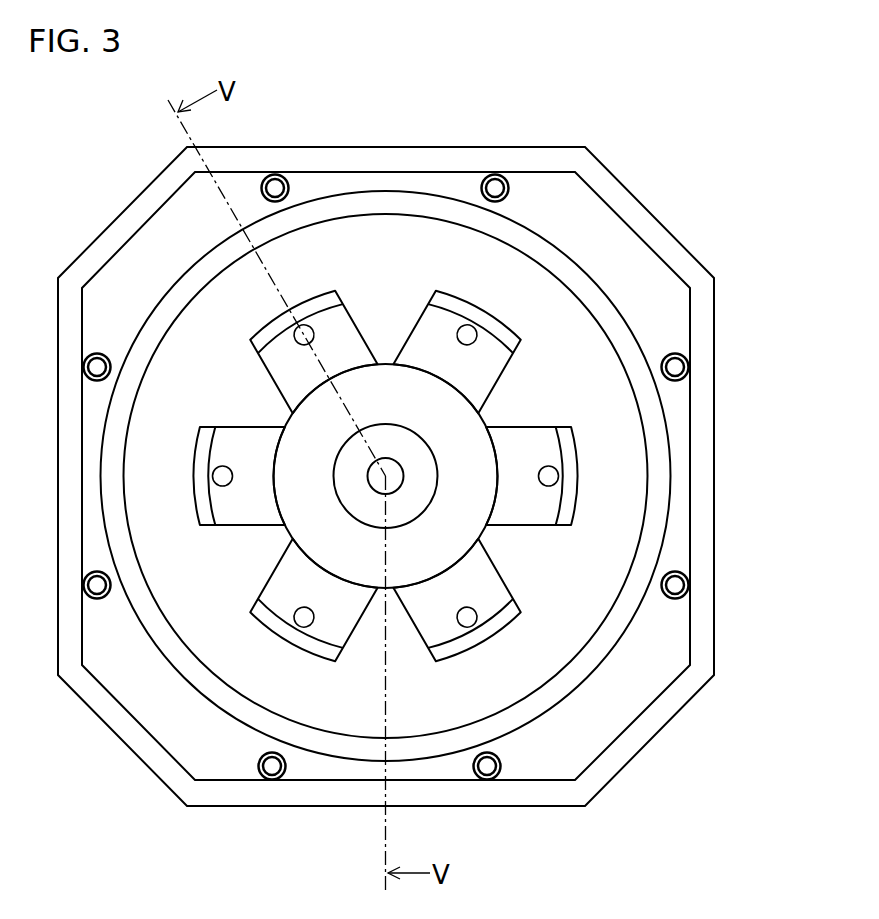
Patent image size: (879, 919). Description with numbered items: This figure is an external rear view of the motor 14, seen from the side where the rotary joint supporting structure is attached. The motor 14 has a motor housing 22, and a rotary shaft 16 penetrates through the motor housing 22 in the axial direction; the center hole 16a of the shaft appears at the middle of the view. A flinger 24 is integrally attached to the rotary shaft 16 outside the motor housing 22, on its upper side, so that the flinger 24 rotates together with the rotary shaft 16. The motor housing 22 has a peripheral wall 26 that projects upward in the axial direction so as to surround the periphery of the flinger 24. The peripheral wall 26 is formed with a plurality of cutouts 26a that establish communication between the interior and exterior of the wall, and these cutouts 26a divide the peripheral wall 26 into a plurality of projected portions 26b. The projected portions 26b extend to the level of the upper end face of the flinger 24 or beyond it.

The motor 14 is at (473, 127).
The motor housing 22 is at (357, 146).
The flinger 24 is at (303, 524).
The rotary shaft 16 is at (385, 423).
The shaft center hole 16a is at (397, 472).
The peripheral wall 26 is at (257, 643).
The cutouts 26a is at (513, 393).
The projected portions 26b is at (448, 328).